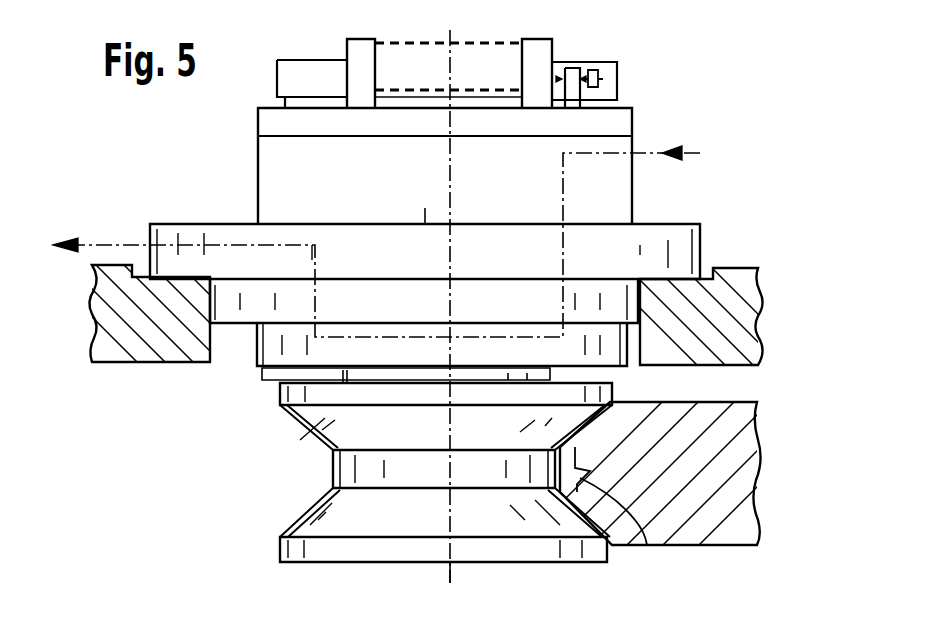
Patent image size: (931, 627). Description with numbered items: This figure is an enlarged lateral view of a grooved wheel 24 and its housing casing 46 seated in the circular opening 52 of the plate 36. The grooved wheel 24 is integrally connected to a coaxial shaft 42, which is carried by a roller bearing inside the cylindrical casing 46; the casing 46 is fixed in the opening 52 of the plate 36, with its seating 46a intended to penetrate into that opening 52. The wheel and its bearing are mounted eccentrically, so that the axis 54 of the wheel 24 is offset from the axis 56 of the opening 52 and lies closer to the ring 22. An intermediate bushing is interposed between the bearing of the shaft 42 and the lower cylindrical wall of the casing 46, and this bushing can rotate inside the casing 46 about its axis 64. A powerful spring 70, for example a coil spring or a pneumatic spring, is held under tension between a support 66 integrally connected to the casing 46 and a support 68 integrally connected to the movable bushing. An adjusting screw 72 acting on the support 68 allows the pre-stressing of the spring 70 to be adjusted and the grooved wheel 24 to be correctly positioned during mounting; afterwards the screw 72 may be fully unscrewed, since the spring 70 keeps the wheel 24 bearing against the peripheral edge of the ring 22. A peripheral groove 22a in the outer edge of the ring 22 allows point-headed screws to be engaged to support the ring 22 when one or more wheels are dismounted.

The ring 22 is at (752, 416).
The peripheral groove 22a is at (647, 545).
The grooved wheel 24 is at (499, 441).
The plate 36 is at (125, 350).
The shaft 42 is at (265, 374).
The casing 46 is at (263, 150).
The seating 46a is at (685, 224).
The circular opening 52 is at (213, 348).
The axis 54 is at (452, 568).
The axis 56 is at (425, 228).
The axis 64 is at (452, 582).
The support 66 is at (360, 42).
The support 68 is at (527, 42).
The spring 70 is at (436, 12).
The adjusting screw 72 is at (596, 68).